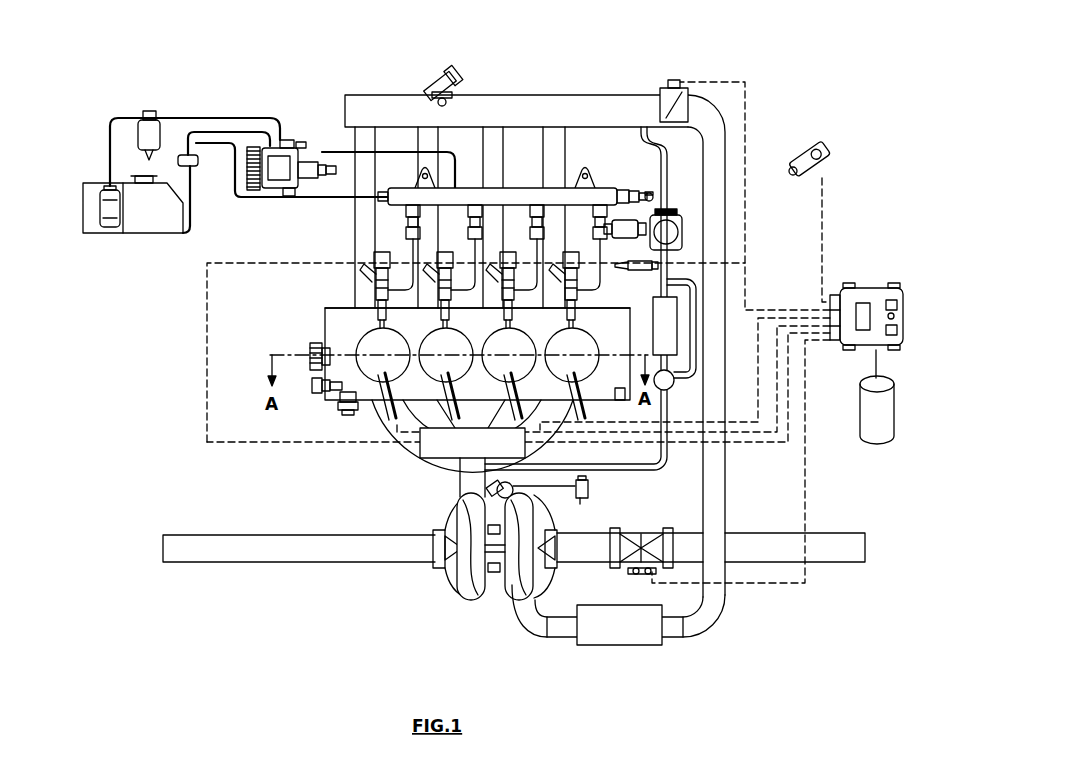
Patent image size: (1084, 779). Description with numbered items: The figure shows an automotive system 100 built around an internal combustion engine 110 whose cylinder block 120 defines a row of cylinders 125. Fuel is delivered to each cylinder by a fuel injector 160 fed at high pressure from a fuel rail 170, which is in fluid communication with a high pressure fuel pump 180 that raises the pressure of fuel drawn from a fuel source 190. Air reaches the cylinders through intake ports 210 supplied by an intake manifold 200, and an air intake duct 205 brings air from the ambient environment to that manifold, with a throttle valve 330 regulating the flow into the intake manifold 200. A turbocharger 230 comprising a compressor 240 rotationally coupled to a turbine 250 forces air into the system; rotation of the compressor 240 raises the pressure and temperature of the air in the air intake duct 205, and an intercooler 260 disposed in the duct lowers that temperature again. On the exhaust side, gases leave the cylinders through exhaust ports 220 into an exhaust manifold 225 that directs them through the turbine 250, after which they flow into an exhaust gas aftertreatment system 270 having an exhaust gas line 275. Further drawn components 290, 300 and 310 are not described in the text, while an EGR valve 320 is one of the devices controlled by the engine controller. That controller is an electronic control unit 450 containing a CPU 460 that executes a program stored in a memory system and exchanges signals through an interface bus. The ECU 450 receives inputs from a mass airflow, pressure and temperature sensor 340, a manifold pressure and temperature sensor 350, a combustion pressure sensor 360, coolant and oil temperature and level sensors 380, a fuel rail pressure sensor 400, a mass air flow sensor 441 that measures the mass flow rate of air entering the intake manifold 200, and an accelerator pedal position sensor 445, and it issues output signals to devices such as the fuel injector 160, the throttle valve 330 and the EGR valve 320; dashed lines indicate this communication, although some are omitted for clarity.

The automotive system 100 is at (263, 85).
The internal combustion engine 110 is at (580, 83).
The cylinder block 120 is at (323, 320).
The cylinder 125 is at (595, 334).
The fuel injector 160 is at (380, 294).
The fuel rail 170 is at (412, 199).
The high pressure fuel pump 180 is at (296, 140).
The fuel source 190 is at (153, 220).
The intake manifold 200 is at (493, 112).
The air intake duct 205 is at (833, 550).
The intake port 210 is at (365, 310).
The exhaust port 220 is at (377, 406).
The exhaust manifold 225 is at (450, 450).
The turbocharger 230 is at (468, 607).
The compressor 240 is at (520, 578).
The turbine 250 is at (467, 575).
The intercooler 260 is at (645, 630).
The exhaust gas aftertreatment system 270 is at (235, 518).
The exhaust gas line 275 is at (175, 552).
The wastegate 290 is at (516, 493).
The EGR passage 300 is at (638, 474).
The EGR cooler 310 is at (668, 340).
The EGR valve 320 is at (665, 210).
The throttle valve 330 is at (676, 80).
The mass airflow, pressure, temperature sensor 340 is at (643, 568).
The manifold pressure and temperature sensor 350 is at (437, 82).
The combustion pressure sensor 360 is at (393, 414).
The coolant and oil temperature and level sensors 380 is at (343, 398).
The fuel rail pressure sensor 400 is at (651, 192).
The mass air flow (MAF) sensor 441 is at (664, 573).
The accelerator pedal position sensor 445 is at (815, 148).
The electronic control unit (ECU) 450 is at (872, 288).
The CPU 460 is at (876, 424).